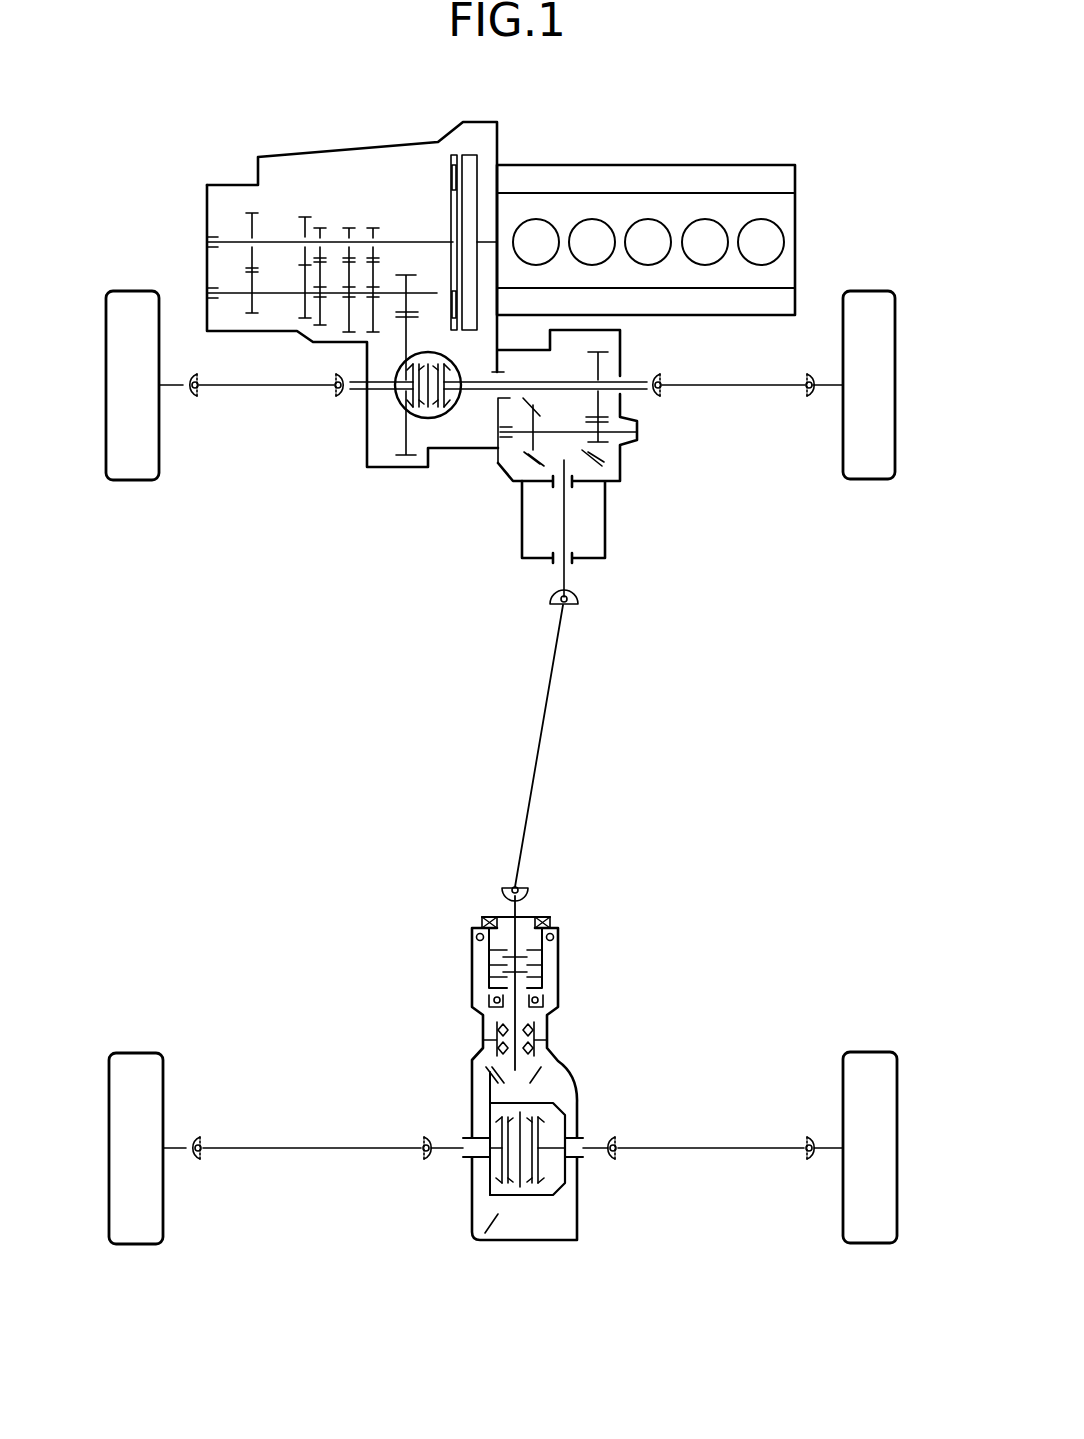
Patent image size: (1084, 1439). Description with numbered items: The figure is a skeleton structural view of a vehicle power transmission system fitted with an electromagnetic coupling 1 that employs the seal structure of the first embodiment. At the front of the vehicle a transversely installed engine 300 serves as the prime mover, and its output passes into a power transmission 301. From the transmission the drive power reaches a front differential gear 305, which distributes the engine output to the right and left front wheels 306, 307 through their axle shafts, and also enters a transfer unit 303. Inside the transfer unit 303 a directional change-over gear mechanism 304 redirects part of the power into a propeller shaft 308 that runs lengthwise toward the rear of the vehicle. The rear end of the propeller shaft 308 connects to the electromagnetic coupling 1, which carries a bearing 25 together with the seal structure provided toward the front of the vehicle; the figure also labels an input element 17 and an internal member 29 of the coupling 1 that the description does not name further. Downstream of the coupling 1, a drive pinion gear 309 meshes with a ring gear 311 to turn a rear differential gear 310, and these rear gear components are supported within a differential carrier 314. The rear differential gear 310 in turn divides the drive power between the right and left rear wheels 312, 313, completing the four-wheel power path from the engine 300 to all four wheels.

The electromagnetic coupling 1 is at (573, 980).
The input shaft 17 is at (546, 911).
The bearing 25 is at (561, 928).
The clutch mechanism 29 is at (549, 990).
The engine 300 is at (652, 165).
The power transmission 301 is at (357, 182).
The transfer unit 303 is at (624, 503).
The directional change-over gear mechanism 304 is at (615, 462).
The front differential gear 305 is at (441, 430).
The left front wheel 306 is at (130, 481).
The right front wheel 307 is at (868, 479).
The propeller shaft 308 is at (538, 767).
The drive pinion gear 309 is at (531, 1078).
The rear differential gear 310 is at (569, 1100).
The ring gear 311 is at (497, 1216).
The left rear wheel 312 is at (133, 1053).
The right rear wheel 313 is at (873, 1052).
The differential carrier 314 is at (578, 1229).